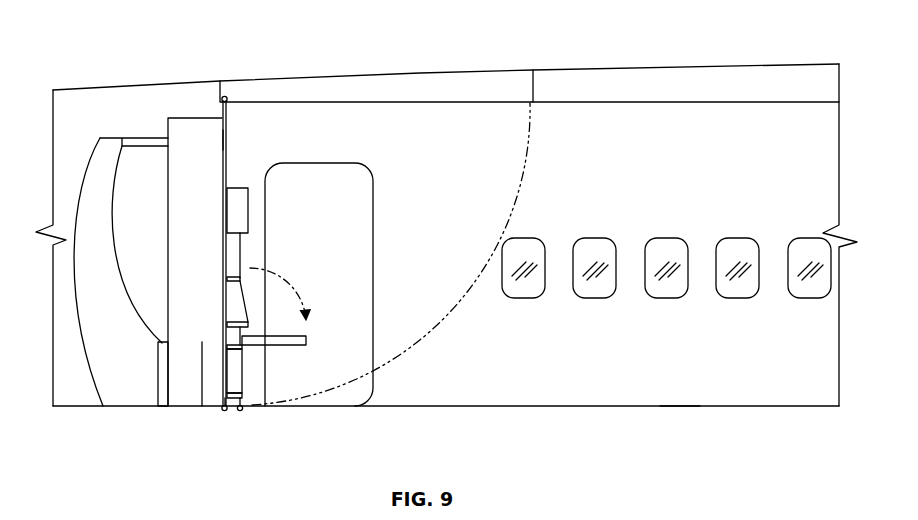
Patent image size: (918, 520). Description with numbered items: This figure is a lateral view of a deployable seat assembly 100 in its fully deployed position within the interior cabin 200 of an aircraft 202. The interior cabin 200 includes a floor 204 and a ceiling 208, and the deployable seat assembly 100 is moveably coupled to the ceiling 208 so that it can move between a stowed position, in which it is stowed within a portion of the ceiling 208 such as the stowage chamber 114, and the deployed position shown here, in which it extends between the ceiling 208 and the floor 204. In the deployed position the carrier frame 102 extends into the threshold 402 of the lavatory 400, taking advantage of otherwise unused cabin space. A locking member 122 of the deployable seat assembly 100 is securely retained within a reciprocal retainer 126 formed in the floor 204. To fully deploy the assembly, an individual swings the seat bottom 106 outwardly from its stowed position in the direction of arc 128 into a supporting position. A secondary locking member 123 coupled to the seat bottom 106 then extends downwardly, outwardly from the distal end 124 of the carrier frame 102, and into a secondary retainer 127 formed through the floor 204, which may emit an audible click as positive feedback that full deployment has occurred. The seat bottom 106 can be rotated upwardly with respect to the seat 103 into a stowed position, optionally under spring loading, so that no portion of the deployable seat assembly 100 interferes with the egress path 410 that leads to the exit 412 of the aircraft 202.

The deployable seat assembly 100 is at (229, 131).
The carrier frame 102 is at (222, 208).
The seat 103 is at (248, 210).
The seat bottom 106 is at (284, 336).
The stowage chamber 114 is at (460, 88).
The locking member 122 is at (221, 409).
The secondary locking member 123 is at (243, 410).
The distal end 124 is at (246, 387).
The reciprocal retainer 126 is at (224, 411).
The secondary retainer 127 is at (240, 411).
The arc 128 is at (284, 274).
The interior cabin 200 is at (712, 363).
The aircraft 202 is at (681, 412).
The floor 204 is at (582, 406).
The ceiling 208 is at (625, 104).
The lavatory 400 is at (190, 112).
The threshold 402 is at (221, 140).
The egress path 410 is at (313, 188).
The exit 412 is at (374, 213).